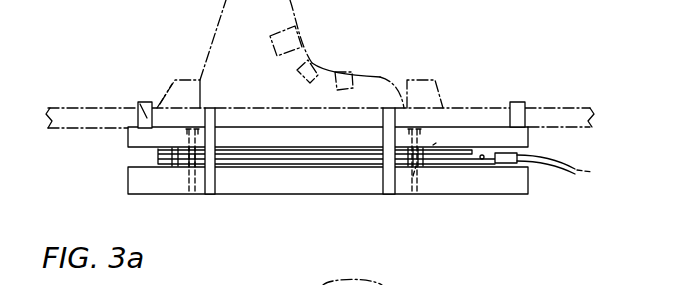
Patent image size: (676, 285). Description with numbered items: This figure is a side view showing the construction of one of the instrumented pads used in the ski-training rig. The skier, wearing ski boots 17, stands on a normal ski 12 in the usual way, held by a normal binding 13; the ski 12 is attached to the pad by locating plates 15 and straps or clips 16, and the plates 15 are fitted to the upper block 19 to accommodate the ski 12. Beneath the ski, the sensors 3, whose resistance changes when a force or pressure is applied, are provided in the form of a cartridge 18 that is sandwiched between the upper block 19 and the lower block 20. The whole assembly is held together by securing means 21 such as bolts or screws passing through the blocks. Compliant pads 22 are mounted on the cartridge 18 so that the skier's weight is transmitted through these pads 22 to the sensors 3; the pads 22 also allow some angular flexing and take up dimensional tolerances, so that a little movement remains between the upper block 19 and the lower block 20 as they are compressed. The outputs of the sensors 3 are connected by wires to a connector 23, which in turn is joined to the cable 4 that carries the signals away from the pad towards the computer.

The sensors 3 is at (178, 168).
The cable 4 is at (560, 173).
The skis 12 is at (262, 118).
The bindings 13 is at (183, 82).
The locating plates 15 is at (143, 108).
The straps or clips 16 is at (208, 187).
The ski boots 17 is at (292, 23).
The cartridge 18 is at (332, 158).
The upper block 19 is at (275, 138).
The lower block 20 is at (293, 177).
The securing means 21 is at (413, 176).
The compliant pads 22 is at (432, 147).
The connector 23 is at (508, 164).